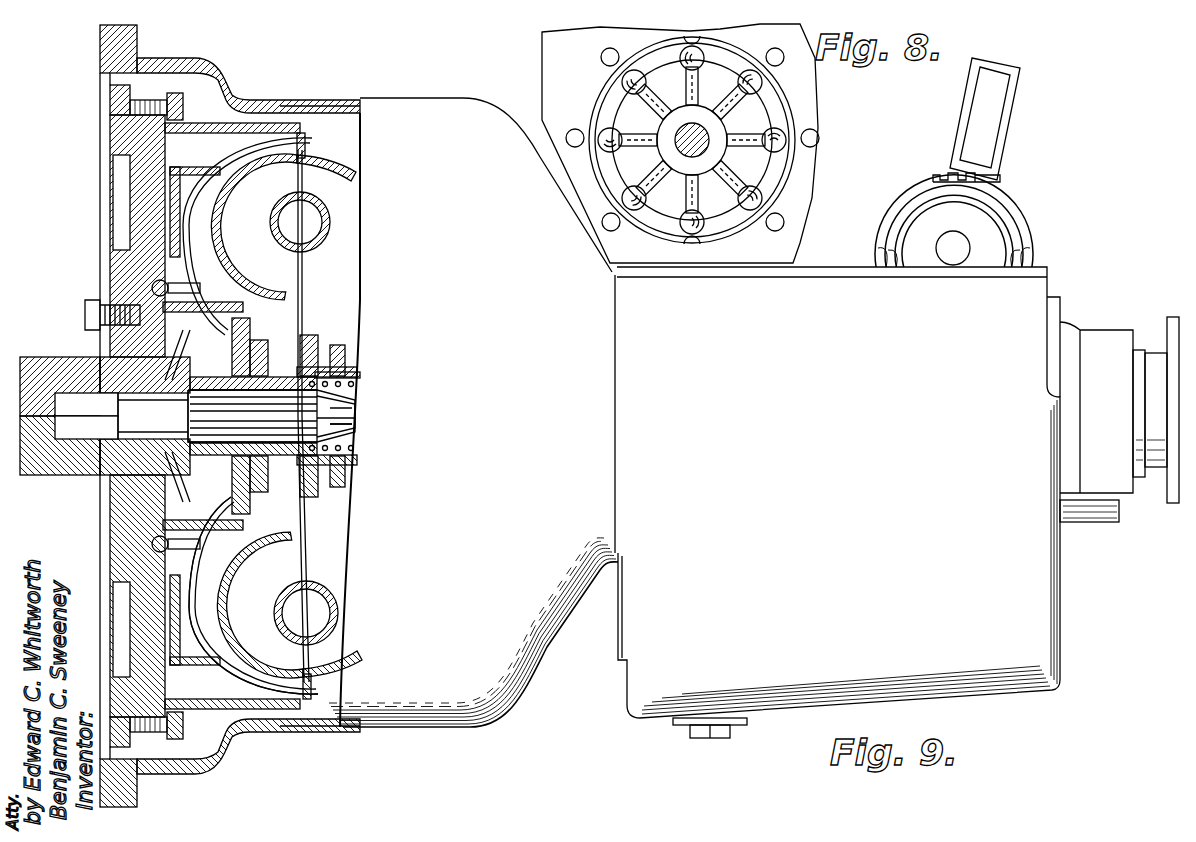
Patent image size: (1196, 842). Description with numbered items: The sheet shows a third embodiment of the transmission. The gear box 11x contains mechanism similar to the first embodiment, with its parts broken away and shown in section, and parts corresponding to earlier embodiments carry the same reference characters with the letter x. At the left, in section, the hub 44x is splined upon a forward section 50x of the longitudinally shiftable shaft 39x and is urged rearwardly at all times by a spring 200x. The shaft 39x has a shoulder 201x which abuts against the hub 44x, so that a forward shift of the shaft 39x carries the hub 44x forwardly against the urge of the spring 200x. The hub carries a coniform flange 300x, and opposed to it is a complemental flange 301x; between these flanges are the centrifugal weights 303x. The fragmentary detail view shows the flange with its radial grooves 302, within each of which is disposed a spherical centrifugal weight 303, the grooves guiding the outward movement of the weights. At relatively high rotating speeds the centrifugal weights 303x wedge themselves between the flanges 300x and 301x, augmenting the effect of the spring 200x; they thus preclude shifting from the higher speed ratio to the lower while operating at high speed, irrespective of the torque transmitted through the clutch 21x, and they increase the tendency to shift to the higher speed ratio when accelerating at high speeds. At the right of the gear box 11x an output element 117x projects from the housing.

In FIG. 8, the radial grooves 302 is at (757, 128).
In FIG. 8, the centrifugal weights 303 is at (764, 148).
In FIG. 9, the gear box 11x is at (815, 266).
In FIG. 9, the output shaft flange 117x is at (1158, 352).
In FIG. 9, the centrifugal weights 303x is at (120, 283).
In FIG. 9, the flange 301x is at (104, 345).
In FIG. 9, the spring 200x is at (250, 335).
In FIG. 9, the hub 44x is at (303, 360).
In FIG. 9, the forward section of shaft 50x is at (320, 393).
In FIG. 9, the longitudinally shiftable shaft 39x is at (300, 418).
In FIG. 9, the shoulder 201x is at (312, 432).
In FIG. 9, the flange 300x is at (214, 548).
In FIG. 9, the clutch 21x is at (320, 692).